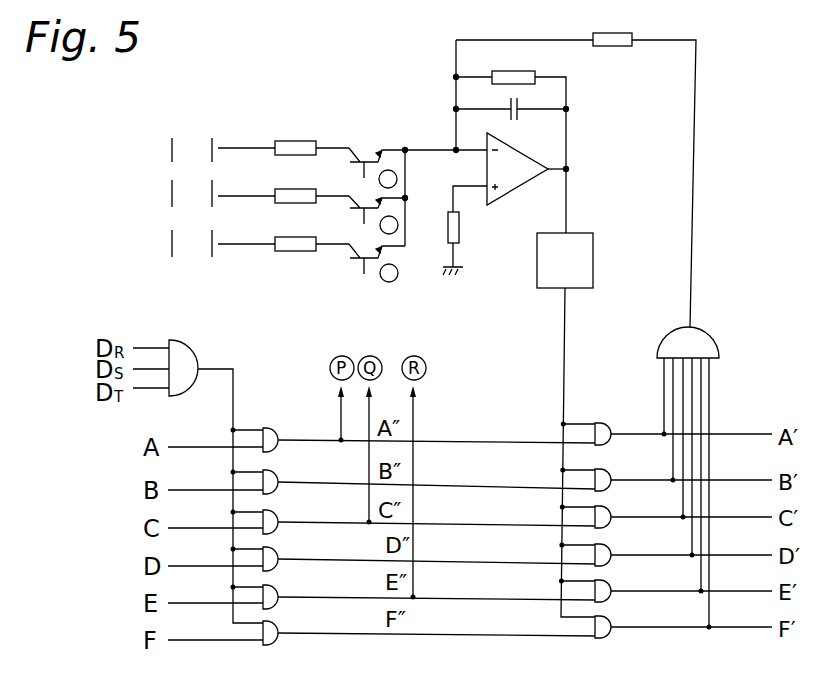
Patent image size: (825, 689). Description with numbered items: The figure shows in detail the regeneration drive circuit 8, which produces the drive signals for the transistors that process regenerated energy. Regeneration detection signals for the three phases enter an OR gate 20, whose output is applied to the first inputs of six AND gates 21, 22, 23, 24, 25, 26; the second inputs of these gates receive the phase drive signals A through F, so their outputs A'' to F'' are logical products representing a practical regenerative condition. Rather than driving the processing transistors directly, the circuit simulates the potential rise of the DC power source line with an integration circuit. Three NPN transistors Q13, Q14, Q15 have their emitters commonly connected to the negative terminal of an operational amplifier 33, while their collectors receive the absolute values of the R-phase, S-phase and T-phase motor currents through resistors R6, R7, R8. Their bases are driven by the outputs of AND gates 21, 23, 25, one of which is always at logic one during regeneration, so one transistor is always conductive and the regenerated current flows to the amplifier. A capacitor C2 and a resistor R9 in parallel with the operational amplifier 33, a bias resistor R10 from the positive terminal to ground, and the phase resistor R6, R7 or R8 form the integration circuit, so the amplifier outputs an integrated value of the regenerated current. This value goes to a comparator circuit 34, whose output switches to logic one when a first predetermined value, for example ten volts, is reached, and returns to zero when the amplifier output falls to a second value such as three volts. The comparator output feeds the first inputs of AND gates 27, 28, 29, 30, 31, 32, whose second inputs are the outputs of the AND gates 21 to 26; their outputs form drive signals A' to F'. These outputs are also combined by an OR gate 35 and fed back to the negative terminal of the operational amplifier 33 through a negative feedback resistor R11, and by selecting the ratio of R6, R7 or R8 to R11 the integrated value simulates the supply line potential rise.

The regeneration drive circuit 8 is at (366, 70).
The OR gate 20 is at (184, 340).
The AND gate 21 is at (280, 429).
The AND gate 22 is at (277, 473).
The AND gate 23 is at (277, 512).
The AND gate 24 is at (277, 550).
The AND gate 25 is at (277, 588).
The AND gate 26 is at (277, 624).
The AND gate 27 is at (607, 425).
The AND gate 28 is at (609, 471).
The AND gate 29 is at (609, 508).
The AND gate 30 is at (609, 547).
The AND gate 31 is at (609, 583).
The AND gate 32 is at (609, 619).
The operational amplifier 33 is at (525, 153).
The comparator circuit 34 is at (595, 260).
The OR gate 35 is at (709, 332).
The resistor R6 is at (288, 140).
The resistor R7 is at (287, 189).
The resistor R8 is at (286, 237).
The resistor R9 is at (517, 72).
The bias resistor R10 is at (460, 230).
The negative feedback resistor R11 is at (627, 32).
The capacitor C2 is at (519, 100).
The NPN transistor Q13 is at (366, 147).
The NPN transistor Q14 is at (363, 193).
The NPN transistor Q15 is at (350, 257).